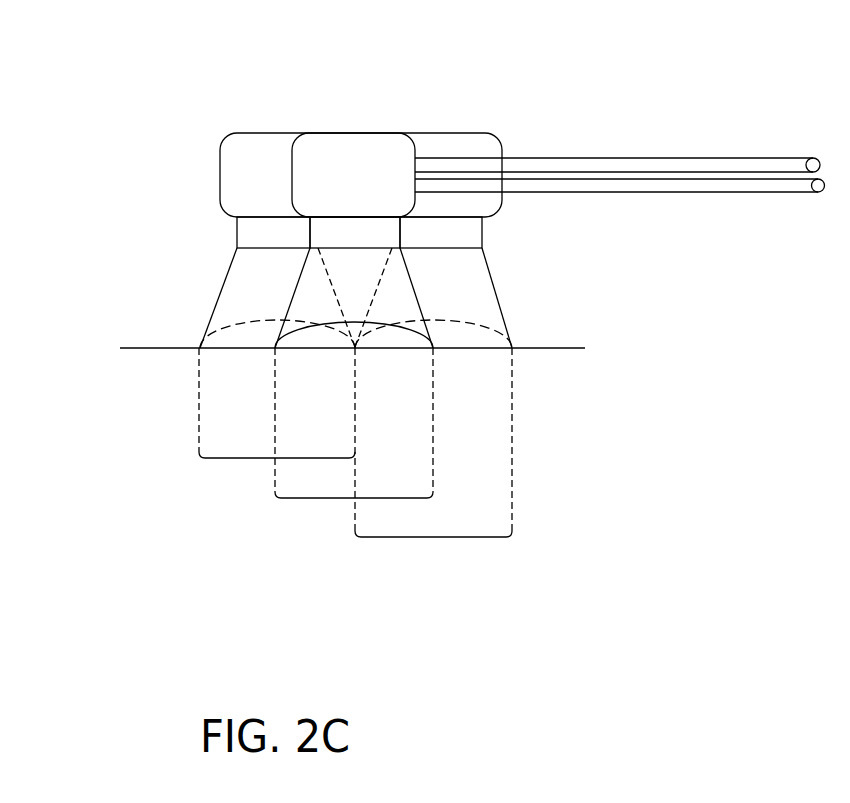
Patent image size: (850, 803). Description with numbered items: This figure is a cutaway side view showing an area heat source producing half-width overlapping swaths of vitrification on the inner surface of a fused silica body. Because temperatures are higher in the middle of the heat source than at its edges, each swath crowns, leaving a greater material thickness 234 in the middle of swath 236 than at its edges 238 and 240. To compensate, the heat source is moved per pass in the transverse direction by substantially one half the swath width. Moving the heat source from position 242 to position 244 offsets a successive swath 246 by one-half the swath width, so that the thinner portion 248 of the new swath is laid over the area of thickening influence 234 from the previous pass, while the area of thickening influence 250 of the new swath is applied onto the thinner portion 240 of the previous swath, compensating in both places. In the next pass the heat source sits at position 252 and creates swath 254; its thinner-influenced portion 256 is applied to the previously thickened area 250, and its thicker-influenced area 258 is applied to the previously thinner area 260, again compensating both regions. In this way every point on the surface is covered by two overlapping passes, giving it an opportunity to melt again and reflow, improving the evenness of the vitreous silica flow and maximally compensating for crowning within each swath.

The greater material thickness 234 is at (279, 320).
The swath 236 is at (277, 460).
The edge 238 is at (200, 348).
The thinner portion 240 is at (356, 350).
The position 242 is at (263, 132).
The position 244 is at (347, 132).
The successive swath 246 is at (355, 500).
The thinner portion 248 is at (276, 349).
The area of thickening influence 250 is at (355, 347).
The position 252 is at (440, 132).
The swath 254 is at (433, 539).
The thinner-influenced portion 256 is at (369, 326).
The thicker-influenced area 258 is at (435, 320).
The previously thinner area 260 is at (427, 345).